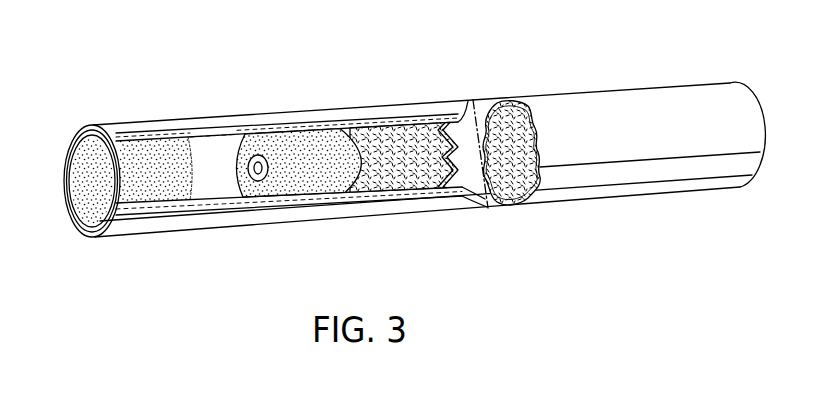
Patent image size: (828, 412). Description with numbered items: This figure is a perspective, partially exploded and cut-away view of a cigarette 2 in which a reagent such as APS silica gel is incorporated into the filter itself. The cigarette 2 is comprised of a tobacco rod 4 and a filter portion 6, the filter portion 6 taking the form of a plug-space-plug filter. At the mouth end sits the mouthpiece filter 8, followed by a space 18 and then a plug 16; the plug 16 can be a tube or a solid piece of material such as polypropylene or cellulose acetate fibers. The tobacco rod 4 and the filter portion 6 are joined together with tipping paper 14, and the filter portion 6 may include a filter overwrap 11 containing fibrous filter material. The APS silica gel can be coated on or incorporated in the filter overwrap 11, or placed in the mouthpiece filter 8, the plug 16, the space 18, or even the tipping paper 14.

The cigarette 2 is at (274, 70).
The tobacco rod 4 is at (616, 91).
The filter portion 6 is at (171, 110).
The mouthpiece filter 8 is at (78, 138).
The filter overwrap 11 is at (82, 222).
The tipping paper 14 is at (335, 116).
The plug 16 is at (327, 172).
The space 18 is at (200, 180).